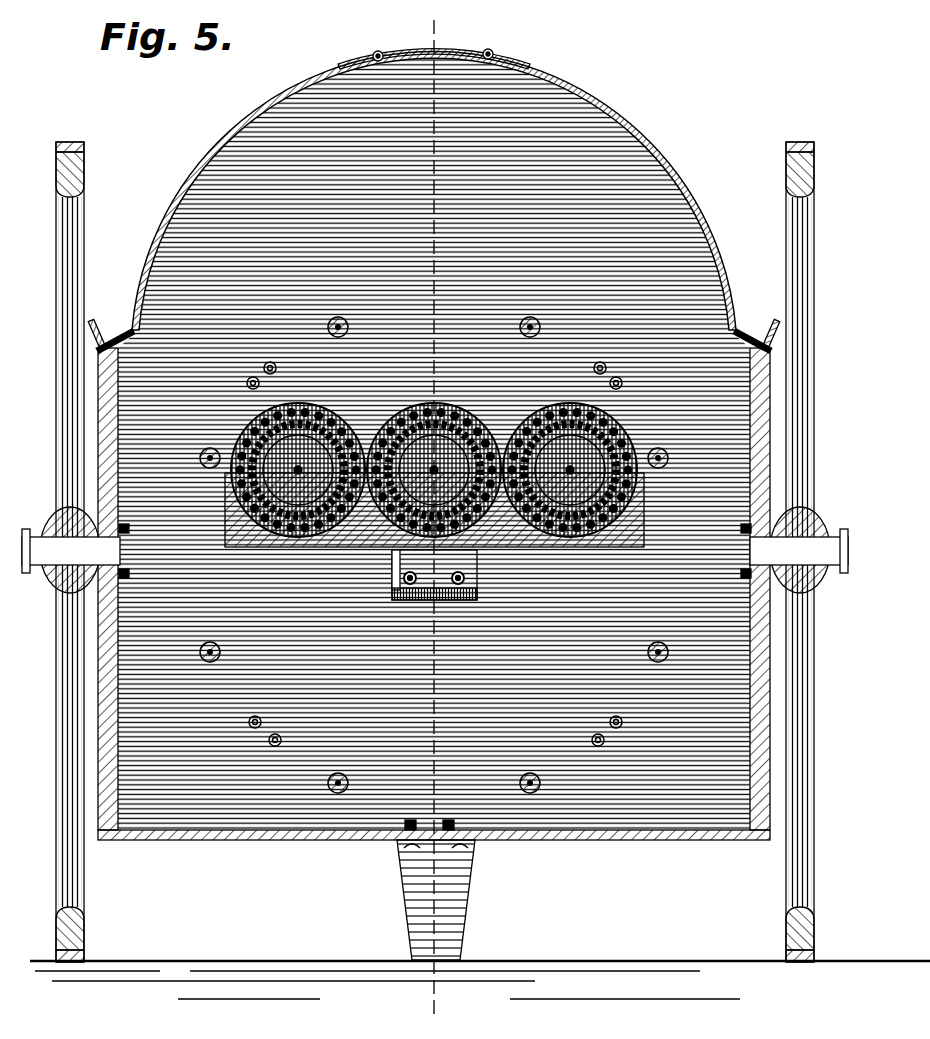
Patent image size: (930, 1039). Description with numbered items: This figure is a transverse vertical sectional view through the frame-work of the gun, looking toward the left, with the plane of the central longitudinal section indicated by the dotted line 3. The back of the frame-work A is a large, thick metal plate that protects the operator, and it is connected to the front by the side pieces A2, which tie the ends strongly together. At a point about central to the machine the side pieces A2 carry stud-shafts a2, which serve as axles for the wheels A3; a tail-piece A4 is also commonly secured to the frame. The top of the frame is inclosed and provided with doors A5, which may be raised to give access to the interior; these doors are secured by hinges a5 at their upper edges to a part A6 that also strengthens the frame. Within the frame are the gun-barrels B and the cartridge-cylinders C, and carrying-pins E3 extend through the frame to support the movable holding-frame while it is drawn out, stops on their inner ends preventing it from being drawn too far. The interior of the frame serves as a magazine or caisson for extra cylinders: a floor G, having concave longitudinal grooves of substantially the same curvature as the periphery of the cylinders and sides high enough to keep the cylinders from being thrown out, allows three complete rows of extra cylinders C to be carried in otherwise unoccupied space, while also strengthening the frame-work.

The back of the frame-work A is at (378, 246).
The side pieces of the frame-work A2 is at (120, 450).
The wheels A3 is at (80, 197).
The tail-piece A4 is at (458, 891).
The doors A5 is at (670, 141).
The strengthening part A6 is at (448, 55).
The stud-shafts a2 is at (435, 550).
The hinges a5 is at (505, 50).
The gun-barrels B is at (326, 327).
The cartridge-cylinders C is at (318, 412).
The carrying-pins E3 is at (601, 735).
The floor or cylinder-support G is at (298, 549).
The section line 3 is at (433, 519).